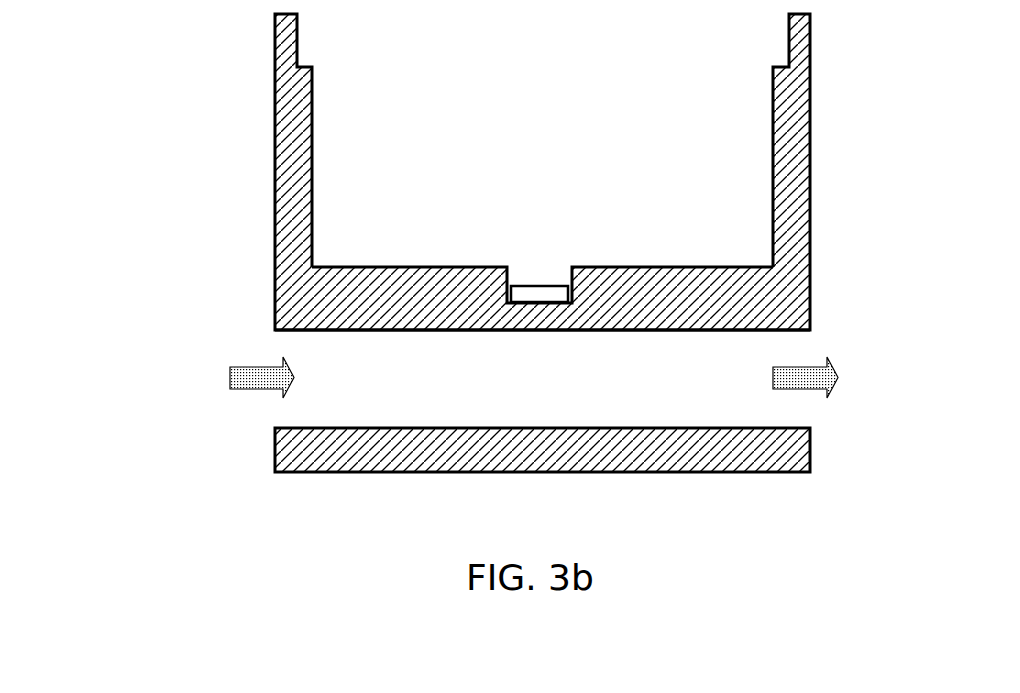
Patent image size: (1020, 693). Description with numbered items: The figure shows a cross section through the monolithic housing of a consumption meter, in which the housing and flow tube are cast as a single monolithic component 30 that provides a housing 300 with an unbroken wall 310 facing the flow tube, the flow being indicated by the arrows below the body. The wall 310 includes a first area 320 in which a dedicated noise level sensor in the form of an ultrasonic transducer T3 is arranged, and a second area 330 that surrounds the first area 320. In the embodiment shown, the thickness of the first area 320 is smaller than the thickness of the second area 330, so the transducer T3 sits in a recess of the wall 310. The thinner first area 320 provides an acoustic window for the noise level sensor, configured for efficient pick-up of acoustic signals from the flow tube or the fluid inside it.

The single monolithic component 30 is at (273, 236).
The housing 300 is at (273, 169).
The unbroken wall 310 is at (273, 295).
The first area 320 is at (538, 332).
The second area 330 is at (476, 267).
The ultrasonic transducer T3 is at (522, 290).